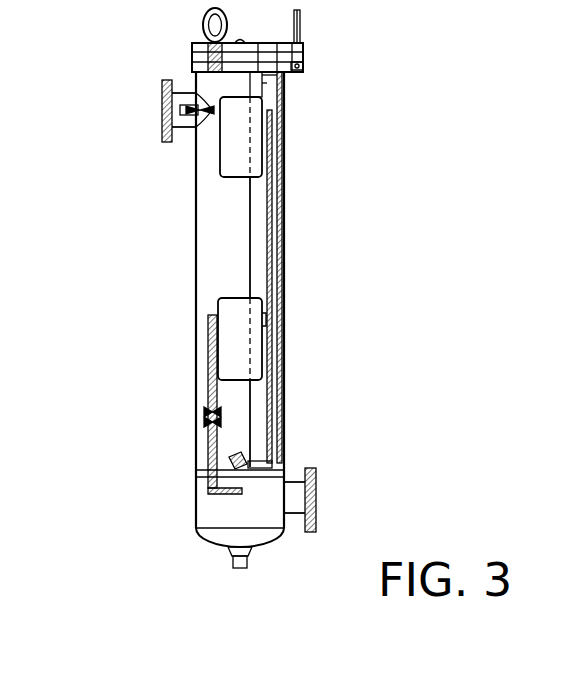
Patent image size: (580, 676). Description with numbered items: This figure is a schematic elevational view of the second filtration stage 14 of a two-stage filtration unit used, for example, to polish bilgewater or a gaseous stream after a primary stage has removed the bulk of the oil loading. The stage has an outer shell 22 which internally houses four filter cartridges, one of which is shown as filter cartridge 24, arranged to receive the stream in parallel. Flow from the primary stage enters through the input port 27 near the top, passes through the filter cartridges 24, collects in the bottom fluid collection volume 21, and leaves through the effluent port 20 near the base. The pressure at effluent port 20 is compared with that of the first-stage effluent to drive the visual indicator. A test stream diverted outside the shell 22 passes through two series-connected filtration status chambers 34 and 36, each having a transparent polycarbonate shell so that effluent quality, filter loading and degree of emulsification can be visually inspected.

The second filtration stage 14 is at (160, 276).
The effluent port 20 is at (316, 490).
The bottom fluid collection volume 21 is at (208, 512).
The outer shell 22 is at (196, 205).
The filter cartridge 24 is at (270, 400).
The input port 27 is at (162, 84).
The filtration status chamber 34 is at (240, 137).
The filtration status chamber 36 is at (263, 340).